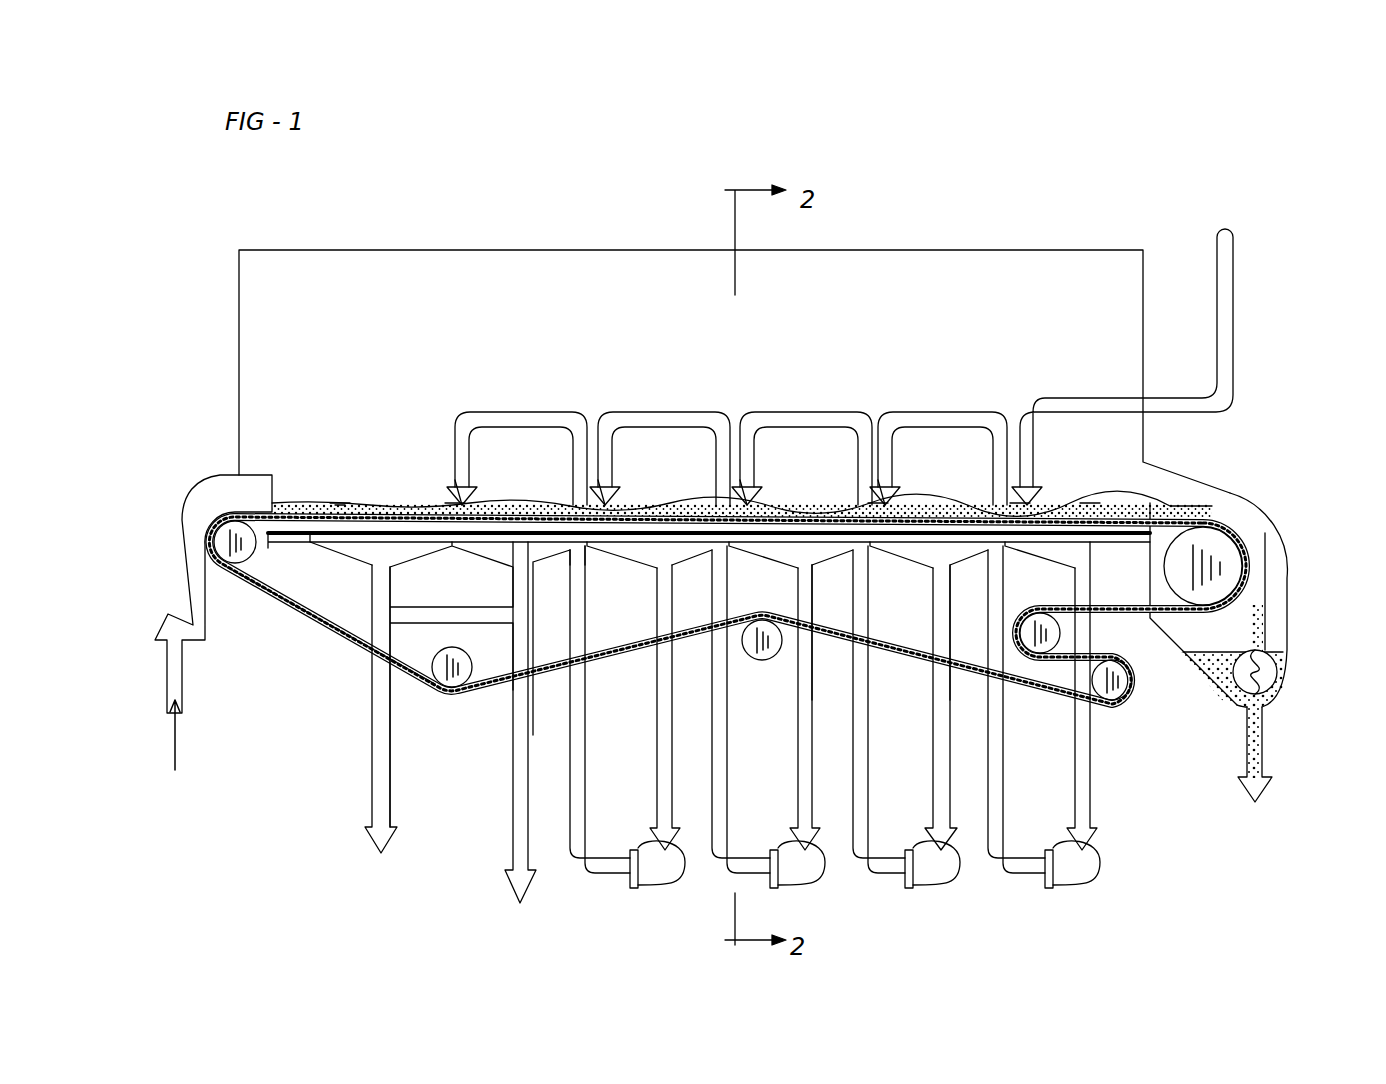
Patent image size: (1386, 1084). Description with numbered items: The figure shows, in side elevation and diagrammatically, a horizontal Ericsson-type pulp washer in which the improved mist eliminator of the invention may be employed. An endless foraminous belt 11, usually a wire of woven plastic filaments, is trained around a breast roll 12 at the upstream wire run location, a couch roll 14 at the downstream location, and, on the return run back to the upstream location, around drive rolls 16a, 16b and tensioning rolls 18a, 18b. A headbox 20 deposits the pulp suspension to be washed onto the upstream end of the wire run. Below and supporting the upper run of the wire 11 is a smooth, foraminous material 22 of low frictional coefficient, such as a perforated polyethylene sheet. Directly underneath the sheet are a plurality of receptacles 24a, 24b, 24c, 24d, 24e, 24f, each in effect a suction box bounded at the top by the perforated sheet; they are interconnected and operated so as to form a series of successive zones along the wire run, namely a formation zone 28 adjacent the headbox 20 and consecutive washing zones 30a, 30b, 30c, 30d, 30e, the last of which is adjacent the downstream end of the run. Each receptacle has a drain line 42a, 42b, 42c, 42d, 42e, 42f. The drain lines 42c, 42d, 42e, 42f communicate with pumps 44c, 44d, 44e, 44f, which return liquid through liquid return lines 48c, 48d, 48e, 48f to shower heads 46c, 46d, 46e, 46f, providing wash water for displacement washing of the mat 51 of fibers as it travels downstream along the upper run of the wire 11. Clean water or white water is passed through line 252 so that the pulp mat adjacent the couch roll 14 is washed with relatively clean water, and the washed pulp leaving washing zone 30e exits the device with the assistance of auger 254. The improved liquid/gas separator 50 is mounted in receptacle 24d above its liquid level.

The endless foraminous belt 11 is at (303, 618).
The breast roll 12 is at (235, 563).
The couch roll 14 is at (1232, 532).
The drive roll 16a is at (1060, 633).
The drive roll 16b is at (1128, 700).
The tensioning roll 18a is at (760, 660).
The tensioning roll 18b is at (443, 690).
The headbox 20 is at (225, 500).
The smooth foraminous material 22 is at (1162, 508).
The receptacle 24a is at (400, 570).
The receptacle 24b is at (450, 490).
The receptacle 24c is at (592, 562).
The receptacle 24d is at (880, 487).
The receptacle 24e is at (1018, 490).
The receptacle 24f is at (1090, 505).
The formation zone 28 is at (340, 560).
The washing zone 30a is at (544, 568).
The washing zone 30b is at (700, 560).
The washing zone 30c is at (838, 568).
The washing zone 30d is at (905, 560).
The washing zone 30e is at (1038, 552).
The drain line 42a is at (375, 812).
The drain line 42b is at (515, 855).
The drain line 42c is at (650, 752).
The drain line 42d is at (818, 750).
The drain line 42e is at (928, 820).
The drain line 42f is at (1070, 768).
The pump 44c is at (655, 862).
The pump 44d is at (798, 862).
The pump 44e is at (930, 865).
The pump 44f is at (1068, 865).
The shower head 46c is at (470, 497).
The shower head 46d is at (612, 497).
The shower head 46e is at (752, 500).
The shower head 46f is at (890, 500).
The liquid return line 48c is at (535, 415).
The liquid return line 48d is at (700, 412).
The liquid return line 48e is at (820, 412).
The liquid return line 48f is at (933, 415).
The liquid/gas separator 50 is at (336, 505).
The mat 51 is at (352, 395).
The line 252 is at (1240, 290).
The auger 254 is at (1282, 658).